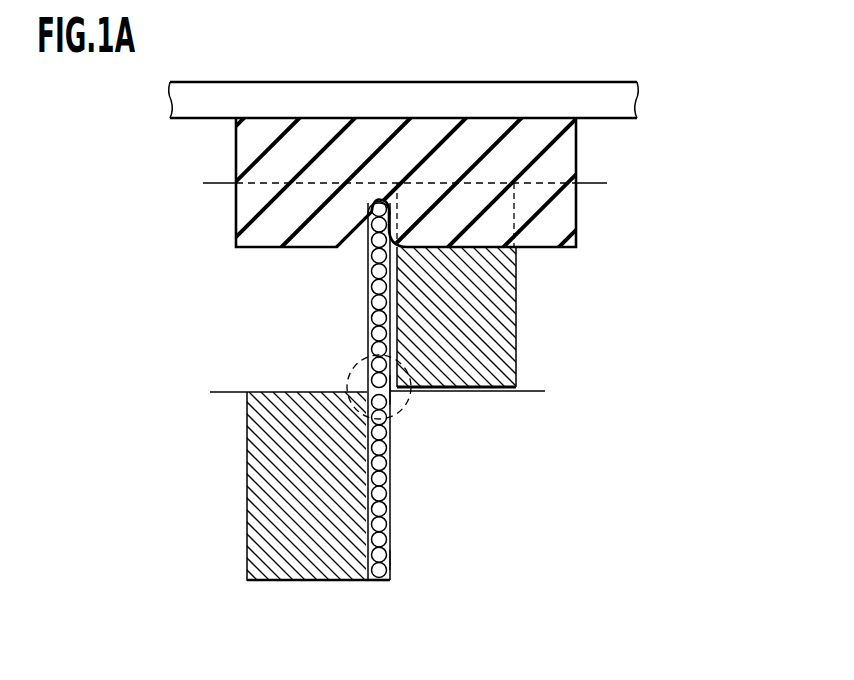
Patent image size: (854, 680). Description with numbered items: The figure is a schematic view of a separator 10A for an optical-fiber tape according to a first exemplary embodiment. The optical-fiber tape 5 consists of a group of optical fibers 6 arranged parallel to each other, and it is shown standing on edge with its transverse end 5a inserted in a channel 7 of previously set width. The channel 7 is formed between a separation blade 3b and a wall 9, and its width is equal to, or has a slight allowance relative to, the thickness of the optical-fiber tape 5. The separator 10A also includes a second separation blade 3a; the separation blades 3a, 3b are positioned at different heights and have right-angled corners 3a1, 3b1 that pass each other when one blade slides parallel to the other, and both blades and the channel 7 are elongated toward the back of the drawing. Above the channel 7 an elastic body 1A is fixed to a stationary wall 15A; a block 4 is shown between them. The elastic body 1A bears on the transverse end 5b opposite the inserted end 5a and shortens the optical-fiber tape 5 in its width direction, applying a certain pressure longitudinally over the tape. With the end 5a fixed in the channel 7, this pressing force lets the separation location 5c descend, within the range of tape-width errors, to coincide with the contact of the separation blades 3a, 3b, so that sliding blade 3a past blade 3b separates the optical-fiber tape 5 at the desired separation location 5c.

The separator 10A is at (693, 71).
The elastic body 1A is at (576, 142).
The stationary wall 15A is at (546, 97).
The holder block 4 is at (562, 222).
The separation blade 3a is at (503, 315).
The right-angled corner 3a1 is at (410, 392).
The separation blade 3b is at (258, 530).
The right-angled corner 3b1 is at (358, 386).
The optical-fiber tape 5 is at (367, 313).
The transverse end 5a is at (380, 583).
The transverse end 5b is at (380, 200).
The separation location 5c is at (403, 412).
The optical fibers 6 is at (390, 517).
The channel 7 is at (364, 386).
The wall 9 is at (394, 560).